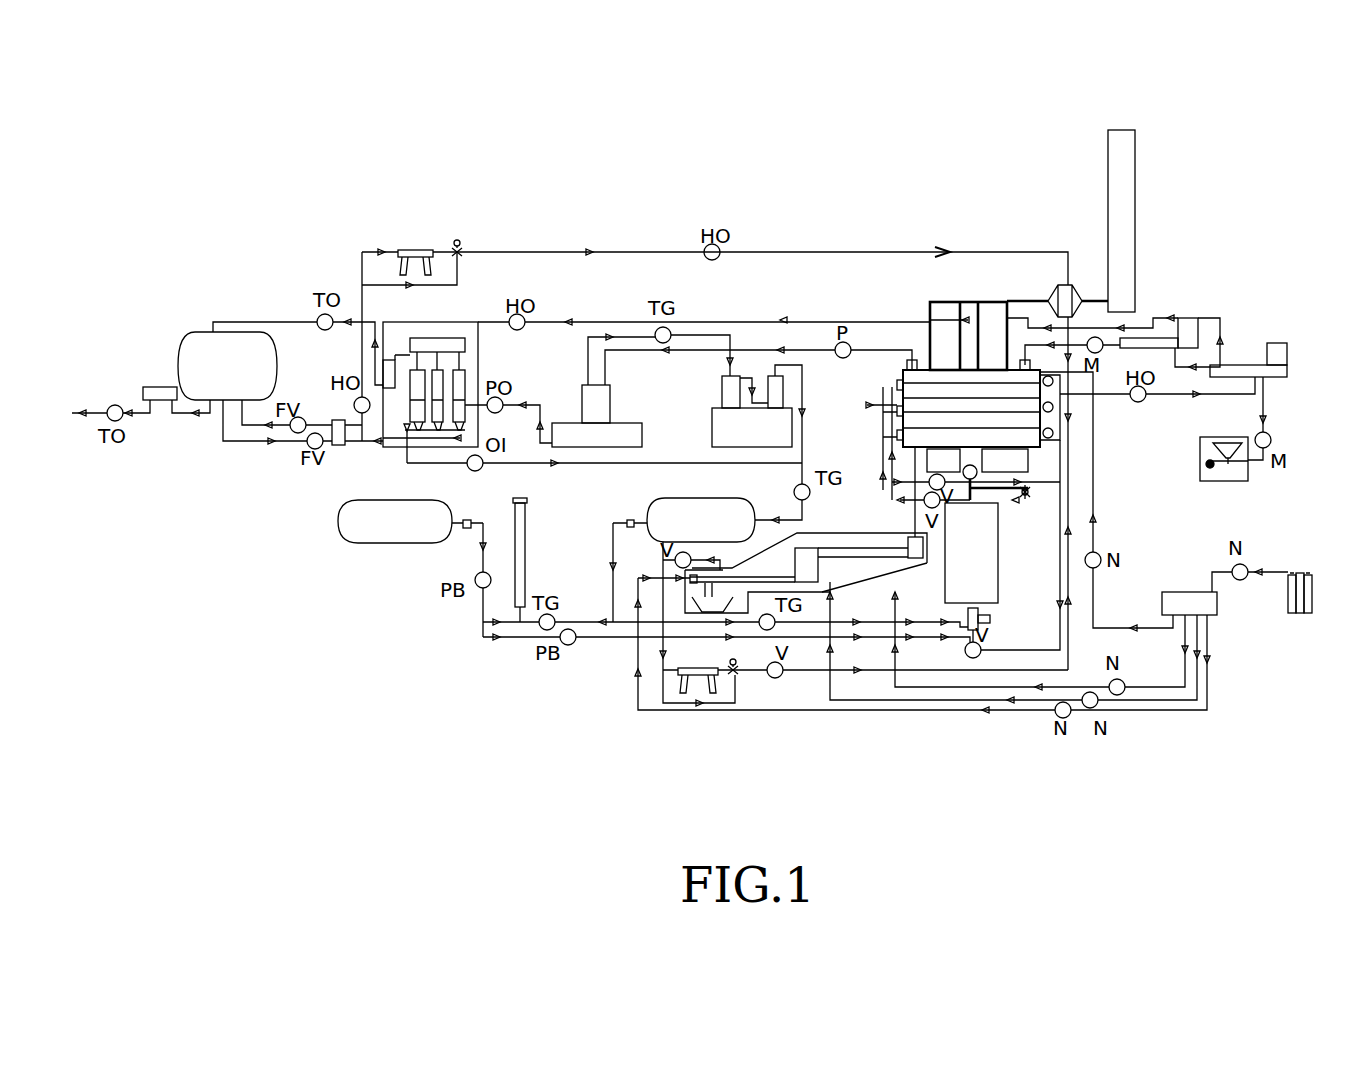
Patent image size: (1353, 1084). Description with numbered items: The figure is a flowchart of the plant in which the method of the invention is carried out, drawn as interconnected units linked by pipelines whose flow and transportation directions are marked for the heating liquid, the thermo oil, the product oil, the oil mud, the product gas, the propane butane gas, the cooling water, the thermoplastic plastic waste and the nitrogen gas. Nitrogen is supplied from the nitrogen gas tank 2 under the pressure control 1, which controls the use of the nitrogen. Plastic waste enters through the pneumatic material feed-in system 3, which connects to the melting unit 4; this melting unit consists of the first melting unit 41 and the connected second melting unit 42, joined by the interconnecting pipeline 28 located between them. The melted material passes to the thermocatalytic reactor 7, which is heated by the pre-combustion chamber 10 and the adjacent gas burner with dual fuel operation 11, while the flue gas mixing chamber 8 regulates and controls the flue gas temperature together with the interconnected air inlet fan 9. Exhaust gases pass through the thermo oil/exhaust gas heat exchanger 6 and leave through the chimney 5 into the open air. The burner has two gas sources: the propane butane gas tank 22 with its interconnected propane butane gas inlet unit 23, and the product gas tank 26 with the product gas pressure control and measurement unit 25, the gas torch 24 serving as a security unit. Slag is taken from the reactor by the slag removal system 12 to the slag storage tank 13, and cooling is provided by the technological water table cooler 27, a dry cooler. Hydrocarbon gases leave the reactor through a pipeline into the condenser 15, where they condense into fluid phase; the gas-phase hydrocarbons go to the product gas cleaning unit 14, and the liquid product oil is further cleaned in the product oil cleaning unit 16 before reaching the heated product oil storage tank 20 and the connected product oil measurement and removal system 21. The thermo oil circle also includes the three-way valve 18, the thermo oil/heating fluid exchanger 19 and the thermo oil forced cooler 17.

The pressure control 1 is at (1218, 612).
The nitrogen gas tank 2 is at (1300, 608).
The pneumatic material feed-in system 3 is at (1198, 480).
The melting unit 4 is at (1200, 264).
The chimney 5 is at (1135, 170).
The thermo oil/exhaust gas heat exchanger 6 is at (1060, 290).
The thermocatalytic reactor 7 is at (925, 370).
The flue gas mixing chamber 8 is at (982, 470).
The air inlet fan 9 is at (1025, 492).
The pre-combustion chamber 10 is at (1000, 556).
The gas burner with dual fuel operation 11 is at (990, 622).
The slag removal system 12 is at (797, 533).
The slag storage tank 13 is at (680, 612).
The product gas cleaning unit 14 is at (712, 410).
The condenser 15 is at (610, 412).
The product oil cleaning unit 16 is at (430, 322).
The thermo oil forced cooler 17 is at (420, 252).
The three-way valve 18 is at (460, 252).
The thermo oil/heating fluid exchanger 19 is at (332, 420).
The heated product oil storage tank 20 is at (195, 333).
The product oil measurement and removal system 21 is at (158, 388).
The propane butane gas tank 22 is at (385, 492).
The propane butane gas inlet unit 23 is at (483, 505).
The gas torch 24 is at (527, 533).
The product gas pressure control and measurement unit 25 is at (628, 518).
The product gas tank 26 is at (720, 500).
The technological water table cooler 27 is at (690, 730).
The interconnecting pipeline 28 is at (1178, 363).
The first melting unit 41 is at (1275, 378).
The second melting unit 42 is at (1200, 315).